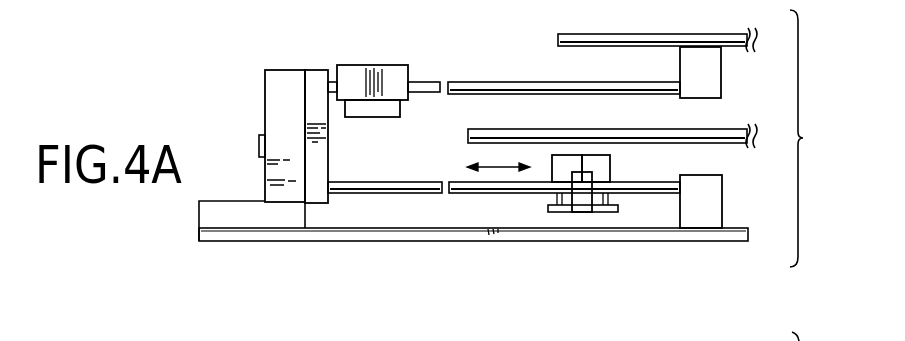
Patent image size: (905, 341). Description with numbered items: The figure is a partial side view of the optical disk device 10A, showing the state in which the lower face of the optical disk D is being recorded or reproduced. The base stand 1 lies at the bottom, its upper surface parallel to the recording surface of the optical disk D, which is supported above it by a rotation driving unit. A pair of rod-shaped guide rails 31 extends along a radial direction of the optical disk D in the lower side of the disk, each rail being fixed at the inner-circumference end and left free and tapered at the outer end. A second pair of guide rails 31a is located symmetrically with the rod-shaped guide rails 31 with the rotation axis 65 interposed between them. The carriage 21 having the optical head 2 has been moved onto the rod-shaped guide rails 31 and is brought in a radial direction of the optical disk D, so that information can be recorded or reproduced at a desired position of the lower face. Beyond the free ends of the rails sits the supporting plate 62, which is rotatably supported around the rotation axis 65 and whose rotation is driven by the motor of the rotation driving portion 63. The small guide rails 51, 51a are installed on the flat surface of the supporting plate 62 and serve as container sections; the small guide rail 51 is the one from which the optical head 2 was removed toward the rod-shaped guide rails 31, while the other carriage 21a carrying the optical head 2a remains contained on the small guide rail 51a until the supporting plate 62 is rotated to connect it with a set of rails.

The base stand 1 is at (707, 241).
The optical head 2 is at (602, 165).
The carriage 21 is at (578, 205).
The carriage 21a is at (368, 80).
The optical head 2a is at (388, 108).
The rod-shaped guide rail 31 is at (468, 193).
The guide rail 31a is at (490, 82).
The small guide rail 51 is at (378, 193).
The small guide rail 51a is at (430, 82).
The supporting plate 62 is at (317, 78).
The rotation driving portion 63 is at (278, 80).
The rotation axis 65 is at (259, 150).
The optical disk D is at (725, 129).
The optical disk device 10A is at (798, 165).